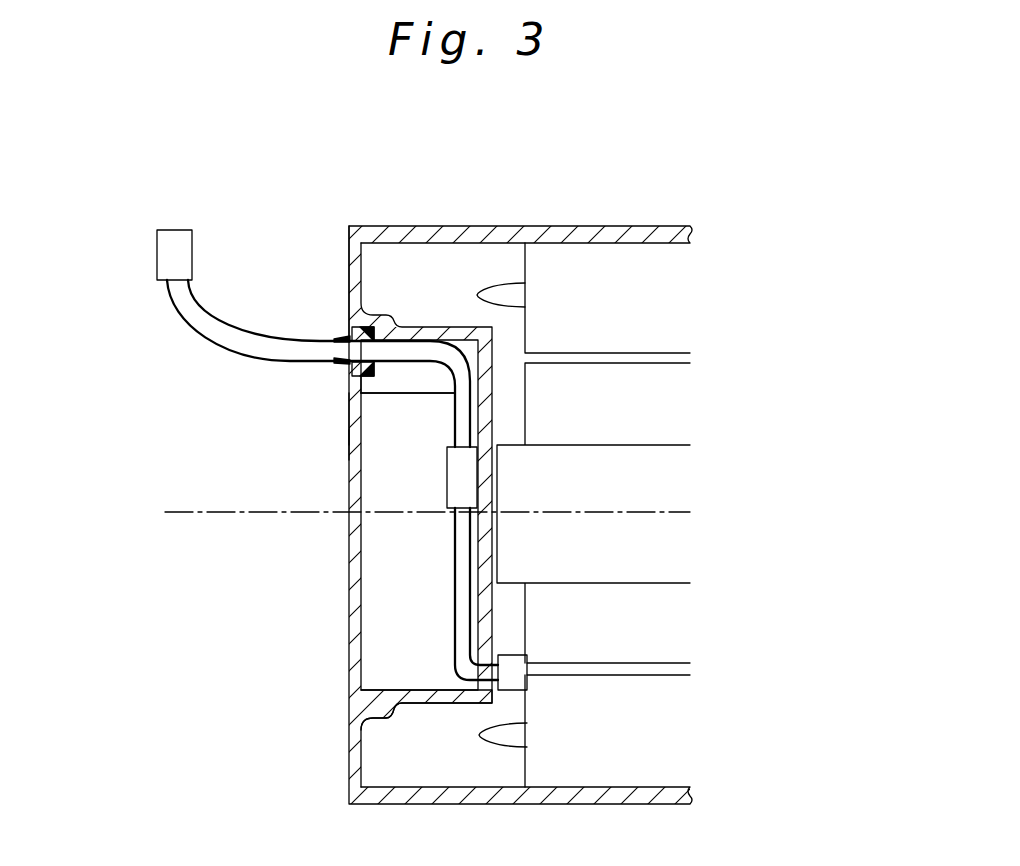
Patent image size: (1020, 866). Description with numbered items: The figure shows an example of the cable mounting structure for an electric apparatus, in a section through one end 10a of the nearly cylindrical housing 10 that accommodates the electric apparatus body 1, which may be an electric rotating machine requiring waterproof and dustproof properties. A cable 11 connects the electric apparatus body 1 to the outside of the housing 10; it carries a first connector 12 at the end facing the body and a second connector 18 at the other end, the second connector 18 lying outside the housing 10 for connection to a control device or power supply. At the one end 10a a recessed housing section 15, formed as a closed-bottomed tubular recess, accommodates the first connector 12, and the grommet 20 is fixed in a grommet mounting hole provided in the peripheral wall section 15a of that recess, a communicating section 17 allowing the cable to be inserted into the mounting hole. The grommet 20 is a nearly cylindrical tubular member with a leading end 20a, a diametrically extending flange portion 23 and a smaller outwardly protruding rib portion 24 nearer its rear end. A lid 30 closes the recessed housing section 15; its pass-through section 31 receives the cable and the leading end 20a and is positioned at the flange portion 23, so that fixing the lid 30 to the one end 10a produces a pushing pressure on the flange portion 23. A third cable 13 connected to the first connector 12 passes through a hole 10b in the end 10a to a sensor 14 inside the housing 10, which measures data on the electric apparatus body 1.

The electric apparatus body 1 is at (507, 272).
The housing 10 is at (607, 227).
The one end of the housing 10a is at (350, 325).
The hole 10b is at (476, 668).
The cable 11 is at (228, 344).
The first connector 12 is at (448, 492).
The third cable 13 is at (463, 595).
The sensor 14 is at (512, 657).
The recessed housing section 15 is at (340, 419).
The peripheral wall section 15a is at (425, 480).
The communicating section 17 is at (405, 378).
The second connector 18 is at (165, 253).
The grommet 20 is at (335, 333).
The leading end of the grommet 20a is at (345, 340).
The flange portion 23 is at (350, 370).
The rib portion 24 is at (346, 389).
The lid 30 is at (340, 443).
The pass-through section 31 is at (340, 358).